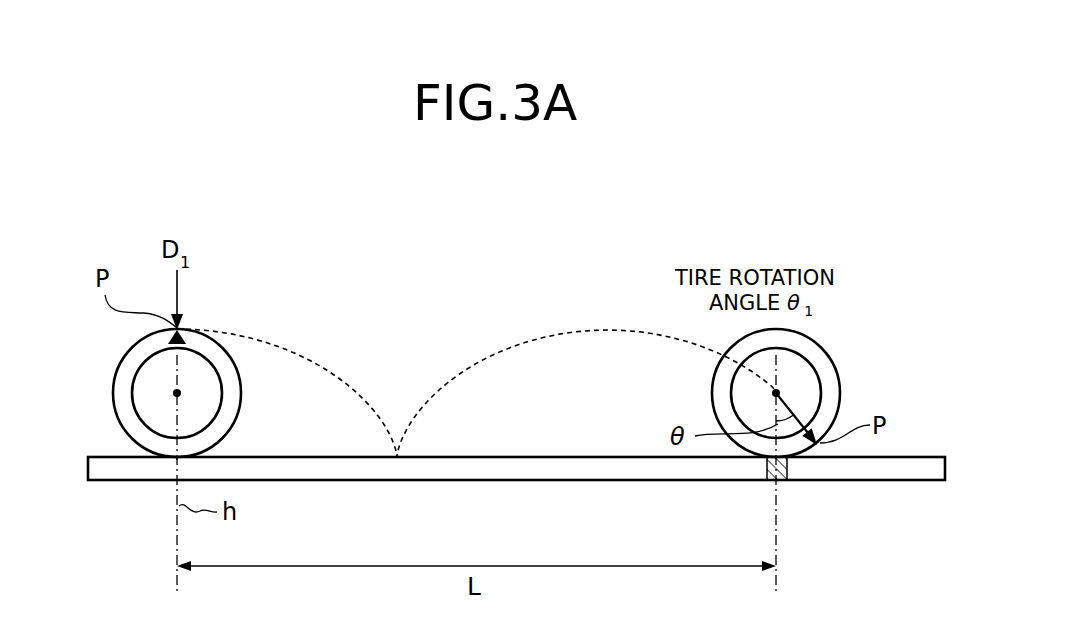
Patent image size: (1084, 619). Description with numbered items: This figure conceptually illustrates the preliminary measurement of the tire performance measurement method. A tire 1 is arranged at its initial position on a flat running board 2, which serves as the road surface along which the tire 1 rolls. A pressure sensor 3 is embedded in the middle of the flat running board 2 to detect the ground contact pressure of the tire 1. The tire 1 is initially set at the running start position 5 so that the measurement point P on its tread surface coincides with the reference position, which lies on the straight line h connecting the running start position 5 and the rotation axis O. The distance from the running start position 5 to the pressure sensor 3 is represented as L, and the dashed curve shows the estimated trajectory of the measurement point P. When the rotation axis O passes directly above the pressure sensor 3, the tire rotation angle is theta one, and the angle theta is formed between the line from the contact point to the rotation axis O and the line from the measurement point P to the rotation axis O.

The tire 1 is at (112, 392).
The flat running board 2 is at (474, 481).
The pressure sensor 3 is at (777, 481).
The running start position 5 is at (168, 468).